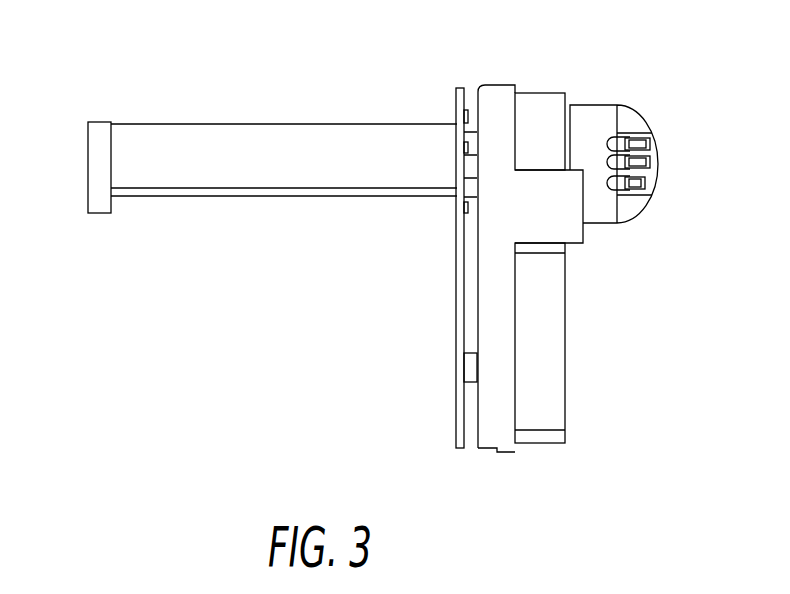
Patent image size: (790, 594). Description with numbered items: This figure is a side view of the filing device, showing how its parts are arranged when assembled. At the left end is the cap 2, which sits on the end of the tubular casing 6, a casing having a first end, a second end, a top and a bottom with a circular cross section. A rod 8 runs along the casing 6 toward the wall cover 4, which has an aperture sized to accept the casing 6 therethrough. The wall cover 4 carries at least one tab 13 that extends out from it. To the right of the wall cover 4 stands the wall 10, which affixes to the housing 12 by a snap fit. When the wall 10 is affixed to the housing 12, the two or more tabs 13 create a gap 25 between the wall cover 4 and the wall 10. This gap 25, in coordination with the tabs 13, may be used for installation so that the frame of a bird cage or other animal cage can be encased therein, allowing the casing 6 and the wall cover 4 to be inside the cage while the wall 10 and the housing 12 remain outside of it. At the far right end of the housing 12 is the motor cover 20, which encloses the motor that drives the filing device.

The cap 2 is at (97, 121).
The casing 6 is at (250, 123).
The rod 8 is at (280, 198).
The wall cover 4 is at (455, 92).
The gap 25 is at (473, 79).
The tab 13 is at (472, 385).
The wall 10 is at (497, 87).
The housing 12 is at (542, 93).
The motor cover 20 is at (637, 107).